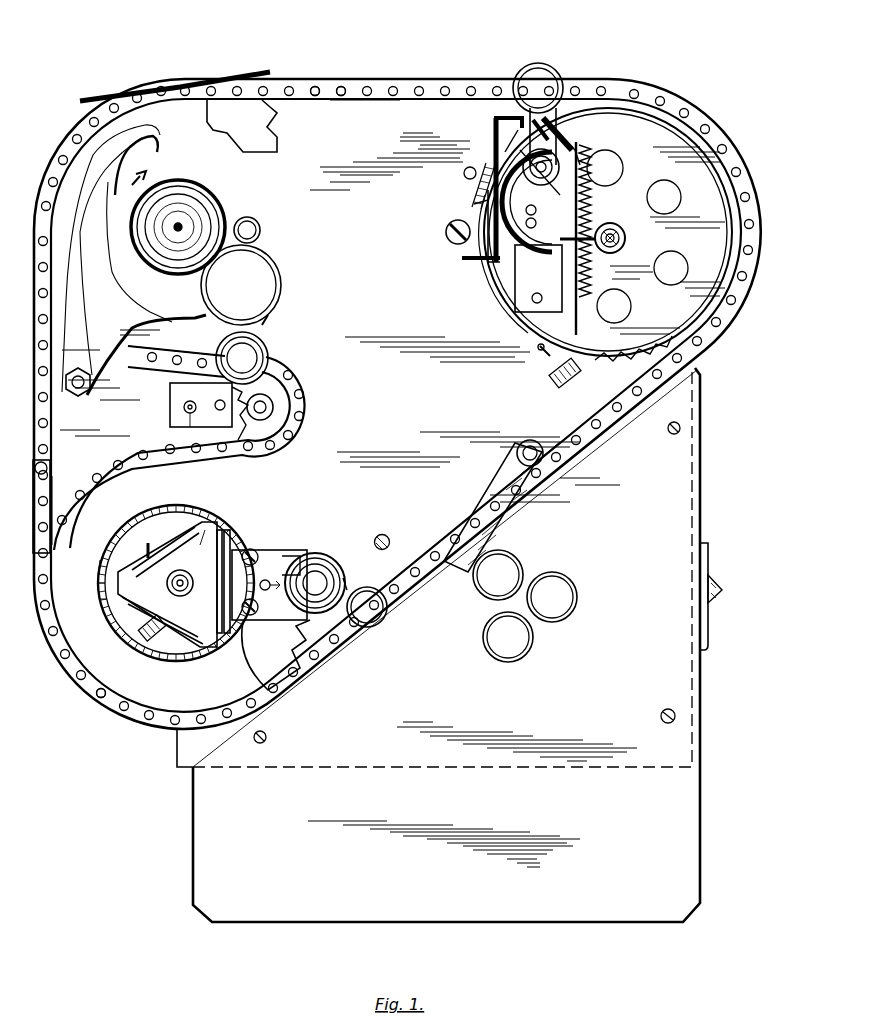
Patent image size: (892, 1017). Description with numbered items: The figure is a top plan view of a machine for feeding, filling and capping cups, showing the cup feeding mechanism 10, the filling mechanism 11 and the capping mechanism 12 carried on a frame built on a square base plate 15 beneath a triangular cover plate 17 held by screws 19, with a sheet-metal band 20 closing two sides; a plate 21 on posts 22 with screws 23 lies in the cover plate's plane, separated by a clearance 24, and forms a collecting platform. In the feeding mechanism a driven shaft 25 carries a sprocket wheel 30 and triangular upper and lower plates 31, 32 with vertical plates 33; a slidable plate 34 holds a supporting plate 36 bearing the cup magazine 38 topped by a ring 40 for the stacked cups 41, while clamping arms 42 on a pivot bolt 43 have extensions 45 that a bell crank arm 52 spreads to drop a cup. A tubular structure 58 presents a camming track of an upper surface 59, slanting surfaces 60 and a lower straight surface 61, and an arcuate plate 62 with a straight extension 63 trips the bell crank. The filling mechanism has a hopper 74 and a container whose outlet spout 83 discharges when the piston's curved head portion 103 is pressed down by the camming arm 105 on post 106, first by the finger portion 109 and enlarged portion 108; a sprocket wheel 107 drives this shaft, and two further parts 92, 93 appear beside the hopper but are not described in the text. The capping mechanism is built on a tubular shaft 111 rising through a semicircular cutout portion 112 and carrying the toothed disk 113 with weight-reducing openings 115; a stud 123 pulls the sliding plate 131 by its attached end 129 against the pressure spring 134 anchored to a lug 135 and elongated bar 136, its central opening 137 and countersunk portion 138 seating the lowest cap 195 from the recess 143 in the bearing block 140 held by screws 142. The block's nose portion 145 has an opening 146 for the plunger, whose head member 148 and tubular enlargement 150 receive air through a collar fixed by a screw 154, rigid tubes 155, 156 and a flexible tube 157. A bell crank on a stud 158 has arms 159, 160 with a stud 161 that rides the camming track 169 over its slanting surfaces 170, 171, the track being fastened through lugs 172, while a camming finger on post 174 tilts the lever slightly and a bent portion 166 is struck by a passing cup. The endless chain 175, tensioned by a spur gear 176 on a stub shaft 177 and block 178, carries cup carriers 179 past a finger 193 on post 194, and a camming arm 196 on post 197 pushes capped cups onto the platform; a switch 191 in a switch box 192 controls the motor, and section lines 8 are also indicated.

The section line / hook 8 is at (310, 338).
The cup feeding mechanism 10 is at (317, 529).
The filling mechanism 11 is at (248, 197).
The capping mechanism 12 is at (432, 196).
The base plate 15 is at (175, 470).
The cover plate 17 is at (335, 112).
The screws 19 is at (384, 534).
The band or strip 20 is at (308, 80).
The plate 21 is at (692, 856).
The vertical posts 22 is at (674, 428).
The screws 23 is at (676, 714).
The clearance 24 is at (545, 505).
The driven shaft 25 is at (186, 576).
The sprocket wheel 30 is at (292, 723).
The upper plate 31 is at (212, 534).
The lower plate 32 is at (240, 504).
The vertical plates 33 is at (165, 549).
The slidable plate 34 is at (215, 588).
The supporting plate 36 is at (282, 548).
The cup magazine 38 is at (359, 577).
The ring 40 is at (330, 560).
The cups 41 is at (322, 565).
The clamping arms 42 is at (262, 552).
The pivot bolt 43 is at (250, 549).
The extension 45 is at (290, 556).
The bell crank arm 52 is at (260, 585).
The tubular structure 58 is at (96, 571).
The upper surface 59 is at (240, 640).
The slanting surfaces 60 is at (100, 552).
The lower straight surface 61 is at (100, 585).
The arcuate plate 62 is at (104, 604).
The straight extension 63 is at (148, 640).
The hopper 74 is at (205, 192).
The outlet spout 83 is at (278, 315).
The reel hub 92 is at (173, 228).
The guide ring 93 is at (262, 228).
The curved head portion 103 is at (270, 268).
The camming arm 105 is at (91, 258).
The post 106 is at (75, 395).
The sprocket wheel 107 is at (225, 118).
The enlarged portion 108 is at (125, 360).
The finger portion 109 is at (176, 344).
The tubular shaft 111 is at (627, 236).
The semicircular cutout portion 112 is at (538, 352).
The toothed disk 113 is at (675, 130).
The openings 115 is at (680, 264).
The stud 123 is at (556, 385).
The attached end 129 is at (500, 315).
The sliding plate 131 is at (538, 313).
The pressure spring 134 is at (605, 262).
The lug 135 is at (588, 148).
The elongated bar 136 is at (580, 300).
The central opening 137 is at (610, 170).
The countersunk portion 138 is at (565, 140).
The bearing block 140 is at (515, 270).
The screws 142 is at (548, 172).
The central circular recess 143 is at (560, 205).
The extension or nose portion 145 is at (556, 100).
The opening 146 is at (537, 63).
The head member 148 is at (562, 108).
The tubular enlargement 150 is at (541, 135).
The screw 154 is at (614, 228).
The rigid tube 155 is at (575, 238).
The rigid tube 156 is at (495, 115).
The flexible tube 157 is at (530, 250).
The stud 158 is at (446, 230).
The bell crank arm 159 is at (510, 115).
The bell crank arm 160 is at (486, 238).
The stud 161 is at (470, 262).
The bent portion 166 is at (108, 92).
The camming track 169 is at (478, 198).
The upwardly slanting surface 170 is at (480, 165).
The downwardly slanting surface 171 is at (503, 150).
The lugs 172 is at (463, 175).
The vertical post 174 is at (622, 405).
The endless chain 175 is at (82, 700).
The spur gear 176 is at (275, 410).
The stub shaft 177 is at (282, 448).
The block 178 is at (200, 420).
The cup carriers 179 is at (558, 46).
The switch 191 is at (722, 590).
The switch box 192 is at (710, 552).
The finger 193 is at (60, 490).
The post 194 is at (42, 462).
The cap 195 is at (508, 568).
The camming arm 196 is at (490, 500).
The post 197 is at (558, 470).